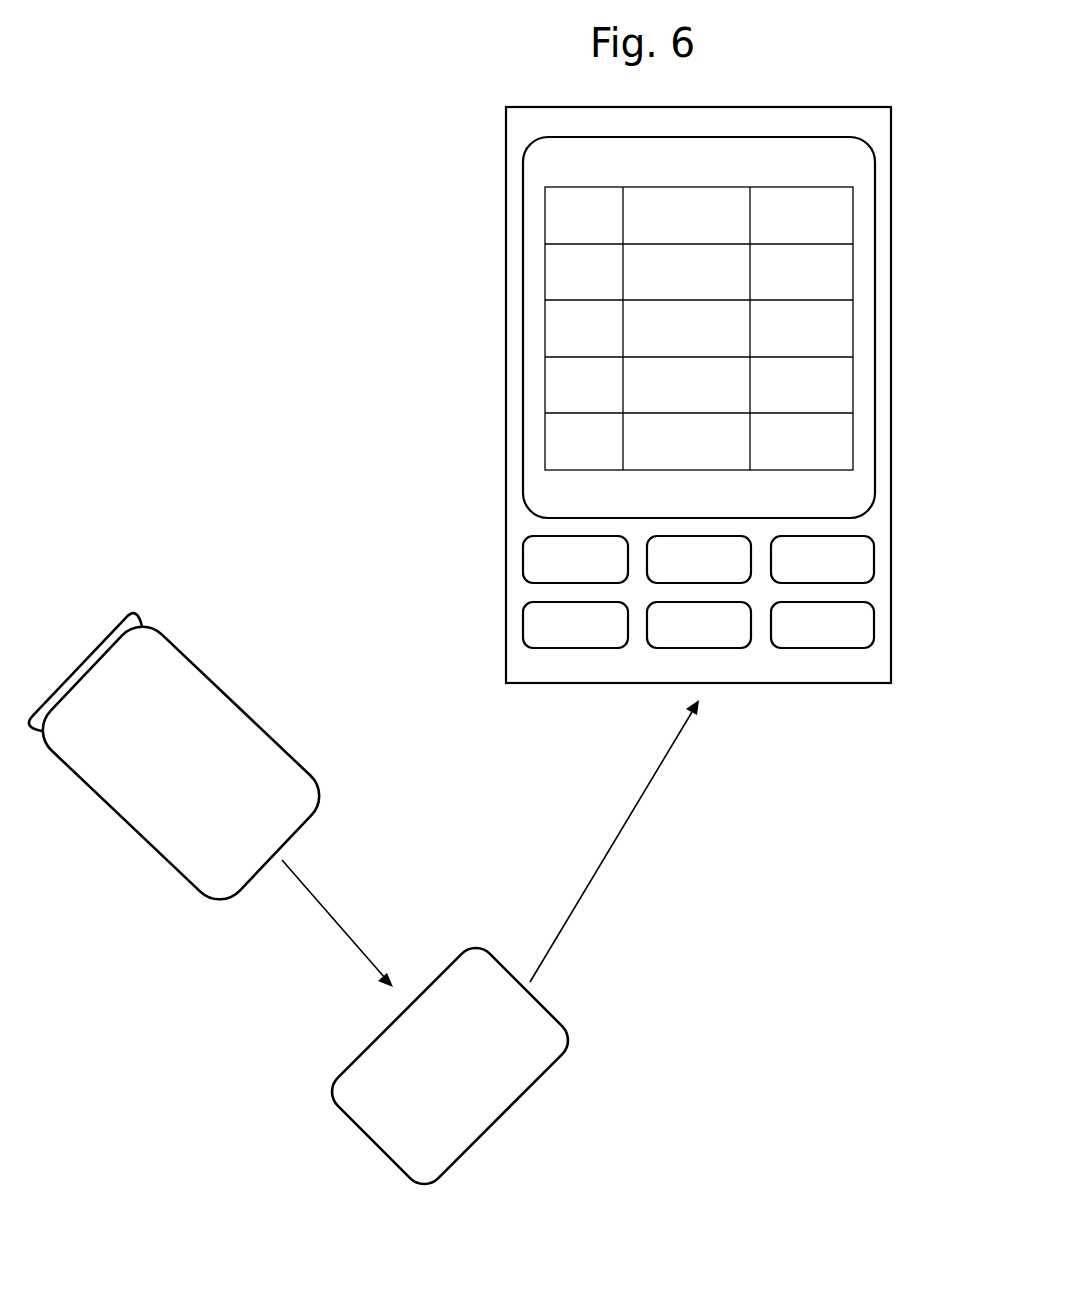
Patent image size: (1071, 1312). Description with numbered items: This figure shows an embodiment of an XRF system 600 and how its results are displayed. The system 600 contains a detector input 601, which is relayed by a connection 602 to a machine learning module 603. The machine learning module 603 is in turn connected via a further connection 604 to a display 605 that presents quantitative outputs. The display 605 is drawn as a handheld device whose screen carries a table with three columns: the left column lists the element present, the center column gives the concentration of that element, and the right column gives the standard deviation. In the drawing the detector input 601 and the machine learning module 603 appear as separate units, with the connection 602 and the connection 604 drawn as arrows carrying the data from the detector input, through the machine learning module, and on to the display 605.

The system 600 is at (308, 341).
The detector input 601 is at (228, 678).
The connection 602 is at (328, 910).
The machine learning module 603 is at (525, 1097).
The connection 604 is at (615, 843).
The display 605 is at (868, 106).